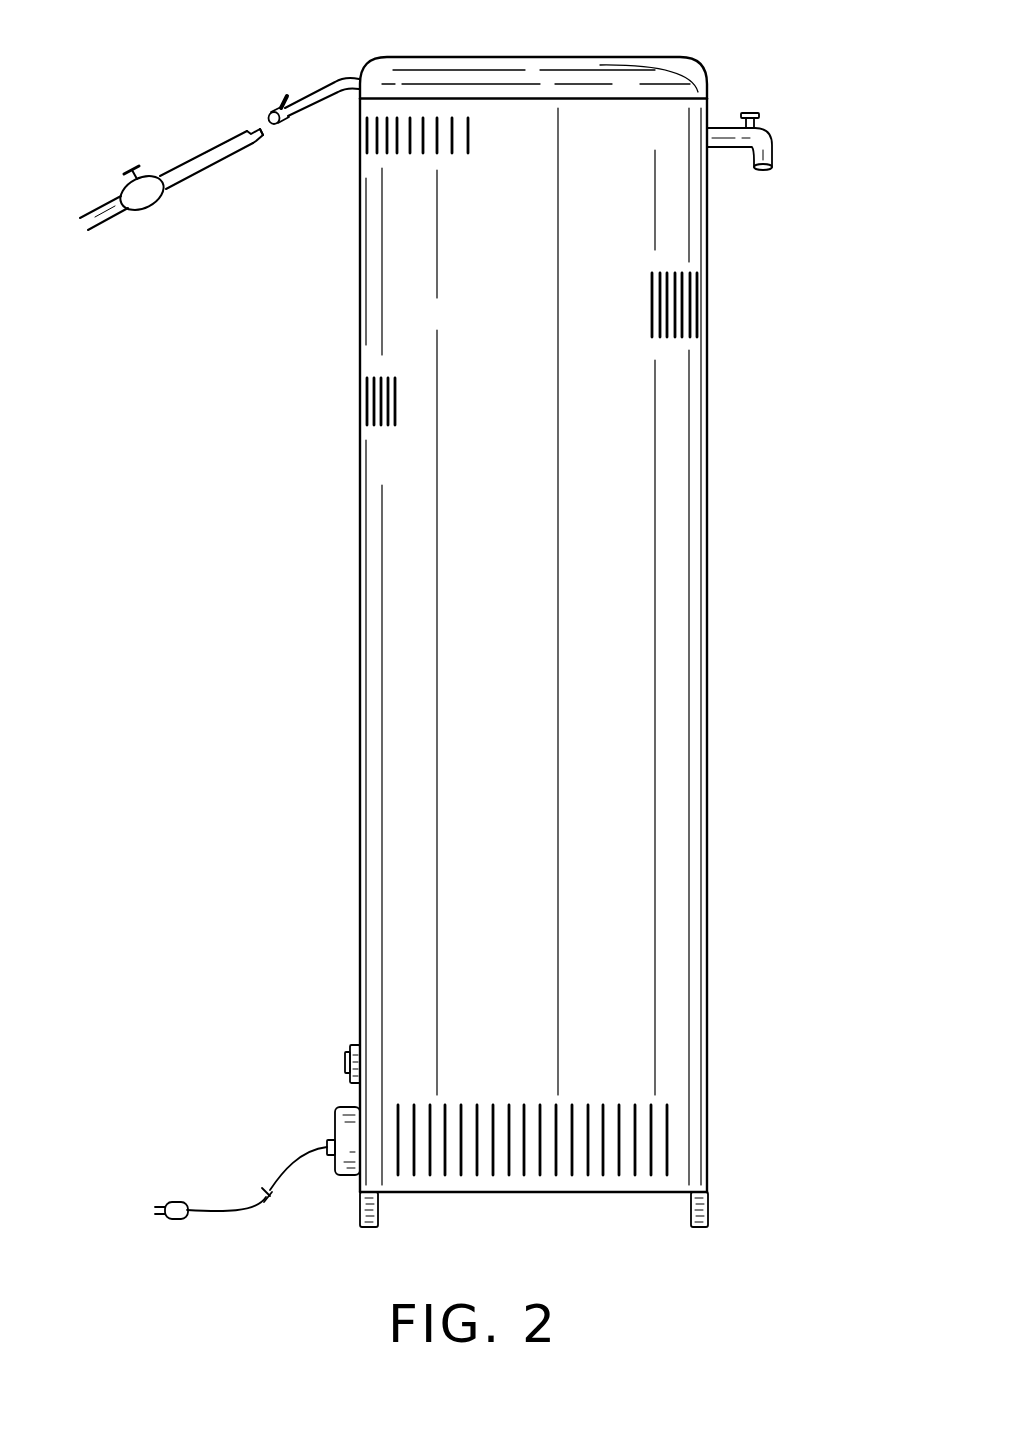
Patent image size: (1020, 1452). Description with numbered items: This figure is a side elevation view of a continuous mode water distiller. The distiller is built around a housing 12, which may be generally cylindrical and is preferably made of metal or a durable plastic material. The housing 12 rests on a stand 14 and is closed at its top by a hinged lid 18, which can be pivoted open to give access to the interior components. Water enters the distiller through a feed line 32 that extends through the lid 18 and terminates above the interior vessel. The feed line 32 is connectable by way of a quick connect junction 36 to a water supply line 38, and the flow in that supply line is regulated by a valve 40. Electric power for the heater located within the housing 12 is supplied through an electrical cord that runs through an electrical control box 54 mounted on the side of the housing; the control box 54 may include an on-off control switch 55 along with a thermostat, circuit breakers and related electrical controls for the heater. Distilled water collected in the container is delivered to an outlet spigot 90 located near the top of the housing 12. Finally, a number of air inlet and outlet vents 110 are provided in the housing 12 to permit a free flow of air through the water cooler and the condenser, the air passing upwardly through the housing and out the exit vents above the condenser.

The housing 12 is at (668, 617).
The stand 14 is at (710, 1212).
The hinged lid 18 is at (545, 78).
The feed line 32 is at (335, 80).
The quick connect junction 36 is at (276, 102).
The water supply line 38 is at (187, 157).
The valve 40 is at (152, 200).
The electrical control box 54 is at (333, 1123).
The on-off control switch 55 is at (345, 1058).
The outlet spigot 90 is at (773, 146).
The air inlet and outlet vents 110 is at (412, 155).